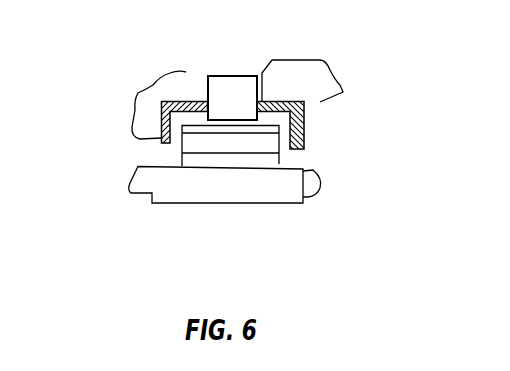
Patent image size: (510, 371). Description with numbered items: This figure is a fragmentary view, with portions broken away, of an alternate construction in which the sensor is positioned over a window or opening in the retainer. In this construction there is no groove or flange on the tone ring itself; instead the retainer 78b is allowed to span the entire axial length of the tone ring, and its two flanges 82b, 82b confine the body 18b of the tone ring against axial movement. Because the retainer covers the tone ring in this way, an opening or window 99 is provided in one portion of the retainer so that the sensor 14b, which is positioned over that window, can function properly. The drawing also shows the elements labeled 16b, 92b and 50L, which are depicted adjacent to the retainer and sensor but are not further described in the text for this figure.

The sensor 14b is at (240, 82).
The window 99 is at (249, 75).
The housing frame 16b is at (192, 101).
The retainer 78b is at (170, 101).
The flanges 82b is at (305, 134).
The lens body 92b is at (343, 92).
The body 18b is at (281, 164).
The lead frame 50L is at (198, 196).